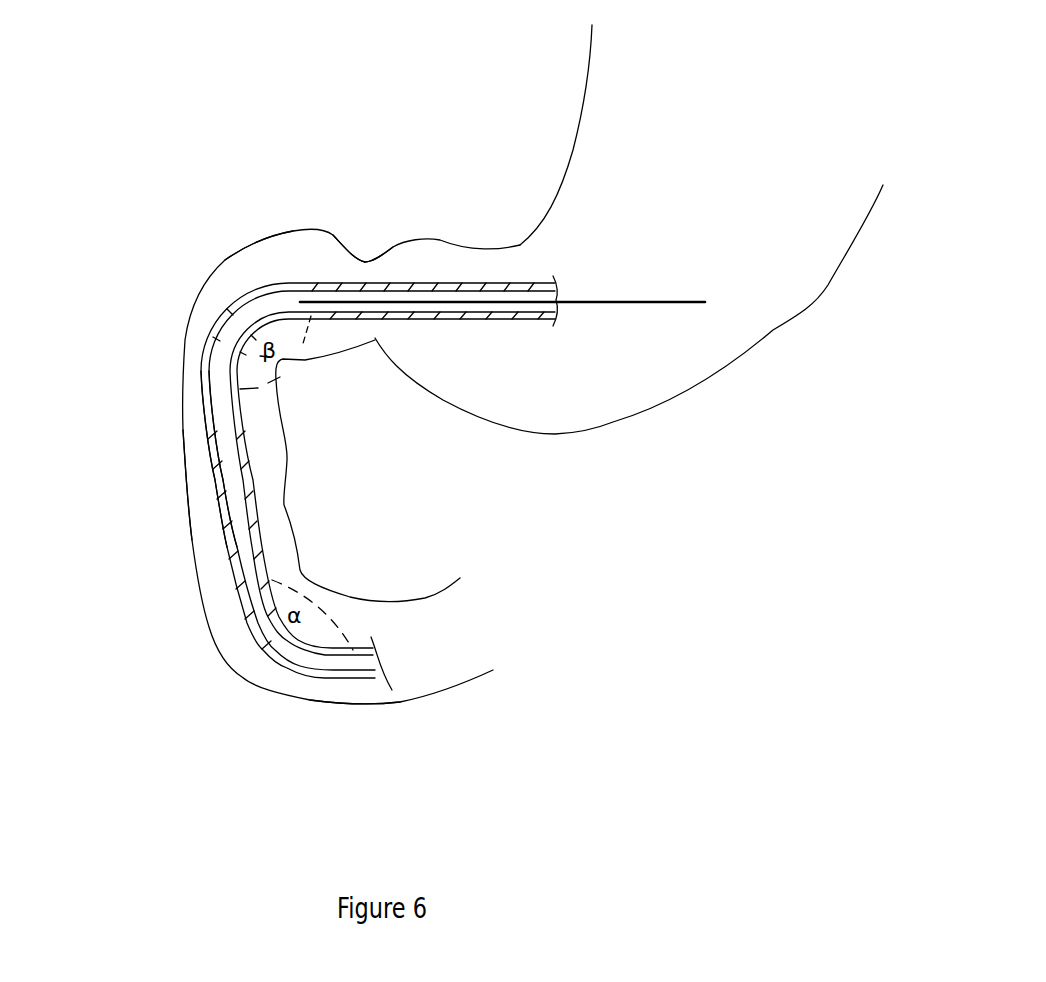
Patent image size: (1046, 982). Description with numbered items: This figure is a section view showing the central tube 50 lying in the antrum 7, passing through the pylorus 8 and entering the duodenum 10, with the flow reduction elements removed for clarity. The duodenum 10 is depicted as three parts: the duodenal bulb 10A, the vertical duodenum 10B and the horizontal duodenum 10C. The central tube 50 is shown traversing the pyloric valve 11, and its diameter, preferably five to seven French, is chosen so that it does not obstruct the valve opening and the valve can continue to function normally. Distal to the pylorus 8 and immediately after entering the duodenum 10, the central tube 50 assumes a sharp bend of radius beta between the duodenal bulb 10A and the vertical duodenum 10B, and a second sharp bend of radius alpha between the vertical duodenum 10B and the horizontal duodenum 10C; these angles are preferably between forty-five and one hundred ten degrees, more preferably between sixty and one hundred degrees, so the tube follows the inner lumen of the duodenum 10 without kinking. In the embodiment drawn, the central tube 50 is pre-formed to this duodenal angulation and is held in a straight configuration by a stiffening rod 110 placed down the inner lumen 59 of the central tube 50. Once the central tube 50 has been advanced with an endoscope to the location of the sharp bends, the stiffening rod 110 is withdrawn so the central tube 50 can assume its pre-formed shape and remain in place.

The antrum 7 is at (587, 373).
The pyloric valve 11 is at (372, 345).
The duodenum 10 is at (162, 405).
The duodenal bulb 10A is at (293, 260).
The pylorus 8 is at (365, 264).
The vertical duodenum 10B is at (197, 473).
The horizontal duodenum 10C is at (373, 690).
The central tube 50 is at (507, 283).
The inner lumen 59 is at (232, 443).
The stiffening rod 110 is at (653, 302).